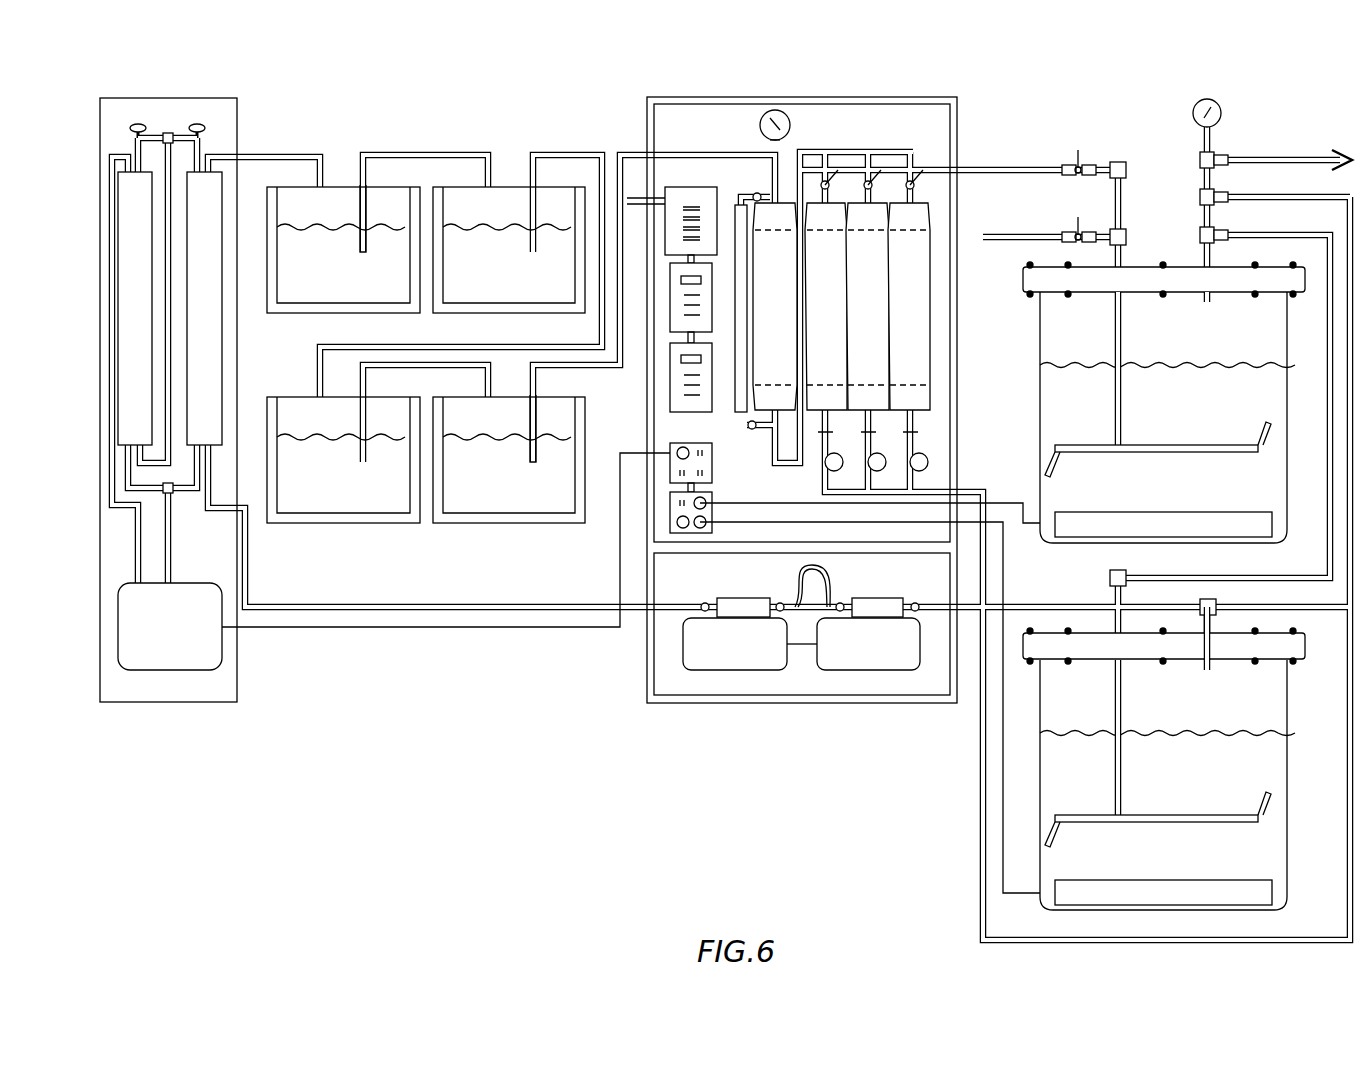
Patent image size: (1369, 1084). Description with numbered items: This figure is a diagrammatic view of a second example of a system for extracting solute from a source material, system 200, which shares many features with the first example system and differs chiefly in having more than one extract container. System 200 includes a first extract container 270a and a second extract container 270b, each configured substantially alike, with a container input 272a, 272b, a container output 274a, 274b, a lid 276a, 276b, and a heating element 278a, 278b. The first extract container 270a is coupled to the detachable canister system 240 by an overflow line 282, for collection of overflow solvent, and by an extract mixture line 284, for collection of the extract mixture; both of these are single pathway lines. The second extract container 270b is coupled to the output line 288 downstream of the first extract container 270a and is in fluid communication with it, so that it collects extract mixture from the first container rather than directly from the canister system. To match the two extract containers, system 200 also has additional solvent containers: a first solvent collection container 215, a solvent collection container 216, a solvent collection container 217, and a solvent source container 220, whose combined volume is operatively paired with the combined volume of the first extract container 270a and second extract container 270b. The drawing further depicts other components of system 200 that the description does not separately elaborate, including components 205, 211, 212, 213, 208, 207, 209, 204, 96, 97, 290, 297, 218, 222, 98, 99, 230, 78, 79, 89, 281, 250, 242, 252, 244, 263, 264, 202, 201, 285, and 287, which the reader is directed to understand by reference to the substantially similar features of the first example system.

The system for extracting solute from a source material 200 is at (157, 832).
The fermentation/culture unit enclosure 205 is at (103, 96).
The valve 211 is at (136, 150).
The valve 212 is at (200, 150).
The center conduit 213 is at (168, 134).
The fluid conduit 290 is at (265, 155).
The fluid conduit 297 is at (627, 155).
The first column 208 is at (118, 340).
The second column 207 is at (222, 372).
The lower manifold conduit 209 is at (128, 485).
The upward flow conduit 96 is at (153, 548).
The downward flow conduit 97 is at (182, 540).
The reservoir 204 is at (170, 626).
The first solvent collection container 215 is at (345, 313).
The solvent collection container 216 is at (513, 313).
The solvent collection container 217 is at (345, 523).
The solvent source container 220 is at (513, 523).
The dip tube 218 is at (363, 252).
The dip tube 222 is at (533, 462).
The processing unit enclosure 98 is at (866, 76).
The return flow direction 99 is at (736, 740).
The controller 230 is at (760, 200).
The sensor module 78 is at (670, 320).
The sensor module 79 is at (670, 398).
The pump unit 89 is at (712, 455).
The detachable canister system 240 is at (882, 134).
The manifold 281 is at (910, 152).
The primary filter vessel 250 is at (780, 410).
The filter housing 242 is at (867, 306).
The filter element 252 is at (866, 305).
The filter outlet chamber 244 is at (866, 368).
The outlet loop 263 is at (838, 440).
The outlet loop 264 is at (898, 456).
The pump 202 is at (735, 644).
The pump 201 is at (868, 644).
The overflow line 282 is at (1025, 170).
The extract mixture line 284 is at (1025, 237).
The pressure gauge 285 is at (1232, 90).
The vent conduit 287 is at (1305, 148).
The output line 288 is at (983, 812).
The first extract container 270a is at (1287, 410).
The container input 272a is at (1122, 335).
The container output 274a is at (1207, 302).
The lid 276a is at (1305, 278).
The heating element 278a is at (1272, 525).
The second extract container 270b is at (1287, 780).
The container input 272b is at (1122, 703).
The container output 274b is at (1207, 670).
The lid 276b is at (1305, 645).
The heating element 278b is at (1272, 893).